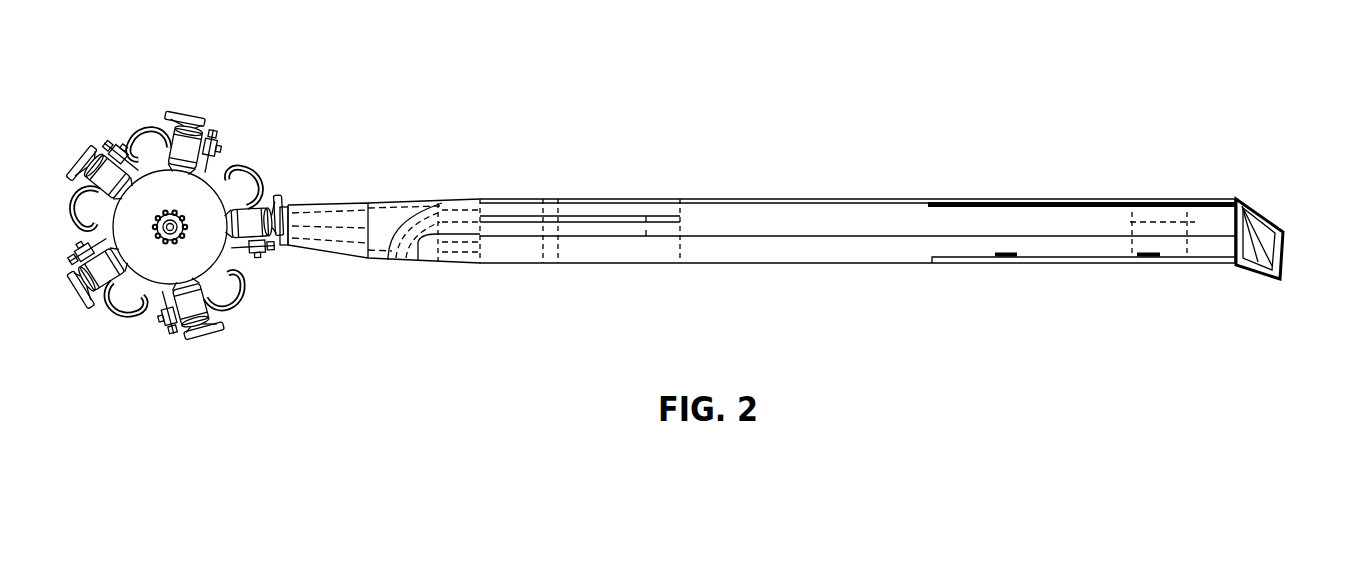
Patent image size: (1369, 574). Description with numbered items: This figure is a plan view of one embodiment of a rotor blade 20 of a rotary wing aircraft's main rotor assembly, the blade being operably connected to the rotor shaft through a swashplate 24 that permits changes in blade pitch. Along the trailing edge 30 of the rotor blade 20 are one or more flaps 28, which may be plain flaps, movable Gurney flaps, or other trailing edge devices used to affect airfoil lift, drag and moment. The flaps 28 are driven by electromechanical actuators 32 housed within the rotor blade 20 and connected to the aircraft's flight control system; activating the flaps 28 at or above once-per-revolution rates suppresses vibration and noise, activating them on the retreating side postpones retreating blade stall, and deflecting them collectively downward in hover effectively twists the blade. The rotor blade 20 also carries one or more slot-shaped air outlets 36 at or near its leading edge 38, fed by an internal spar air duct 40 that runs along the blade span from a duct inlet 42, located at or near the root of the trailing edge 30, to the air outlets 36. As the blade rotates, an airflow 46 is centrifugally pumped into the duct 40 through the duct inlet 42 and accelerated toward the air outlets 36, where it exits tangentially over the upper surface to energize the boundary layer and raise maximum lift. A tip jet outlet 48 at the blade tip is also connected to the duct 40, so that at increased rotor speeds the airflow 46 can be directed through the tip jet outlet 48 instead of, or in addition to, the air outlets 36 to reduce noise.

The rotor blade 20 is at (360, 198).
The swashplate 24 is at (90, 146).
The flaps 28 is at (1028, 263).
The trailing edge 30 is at (898, 263).
The electromechanical actuators 32 is at (1005, 257).
The air outlets 36 is at (985, 198).
The leading edge 38 is at (856, 198).
The internal spar air duct 40 is at (757, 236).
The duct inlet 42 is at (402, 262).
The airflow 46 is at (407, 283).
The tip jet outlet 48 is at (1287, 258).